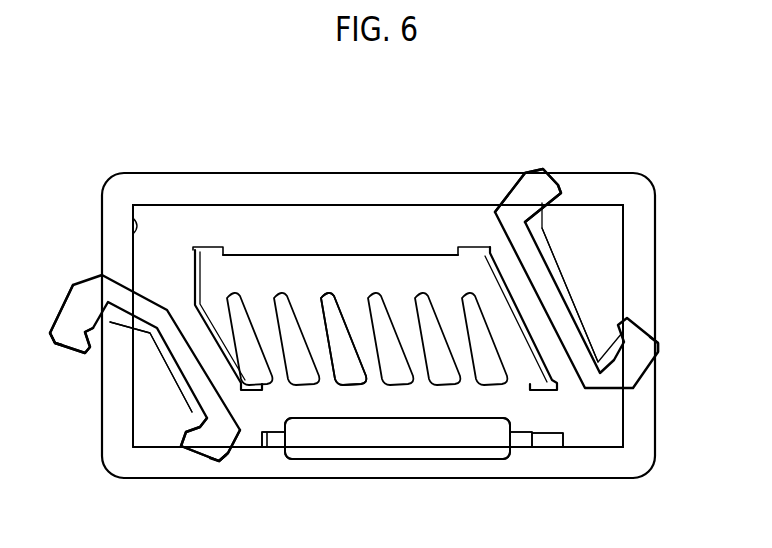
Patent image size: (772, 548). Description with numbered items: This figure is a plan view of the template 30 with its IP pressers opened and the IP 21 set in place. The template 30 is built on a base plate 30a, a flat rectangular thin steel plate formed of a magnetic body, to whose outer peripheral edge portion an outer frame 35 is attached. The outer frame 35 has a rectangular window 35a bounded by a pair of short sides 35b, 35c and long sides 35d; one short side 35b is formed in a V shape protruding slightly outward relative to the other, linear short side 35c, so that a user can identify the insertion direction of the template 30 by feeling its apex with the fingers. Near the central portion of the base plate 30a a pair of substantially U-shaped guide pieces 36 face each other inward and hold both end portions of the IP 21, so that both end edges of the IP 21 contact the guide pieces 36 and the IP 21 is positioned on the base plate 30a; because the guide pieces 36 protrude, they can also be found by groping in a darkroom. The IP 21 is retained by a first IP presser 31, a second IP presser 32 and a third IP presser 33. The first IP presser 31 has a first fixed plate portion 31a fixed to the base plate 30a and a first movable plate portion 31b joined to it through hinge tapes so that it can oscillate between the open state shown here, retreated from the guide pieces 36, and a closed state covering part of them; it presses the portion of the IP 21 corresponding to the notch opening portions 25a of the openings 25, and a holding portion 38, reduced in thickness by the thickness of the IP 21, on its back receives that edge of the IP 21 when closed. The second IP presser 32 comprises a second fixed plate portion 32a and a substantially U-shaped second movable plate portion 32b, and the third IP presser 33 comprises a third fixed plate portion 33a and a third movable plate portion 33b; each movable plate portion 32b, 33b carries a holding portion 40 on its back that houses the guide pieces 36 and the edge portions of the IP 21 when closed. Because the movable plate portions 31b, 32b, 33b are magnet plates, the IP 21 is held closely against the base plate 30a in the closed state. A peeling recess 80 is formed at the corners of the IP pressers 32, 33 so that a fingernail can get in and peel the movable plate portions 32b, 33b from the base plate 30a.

The IP 21 is at (371, 263).
The slot 25 is at (400, 342).
The notch opening portion 25a is at (326, 374).
The template 30 is at (356, 166).
The base plate 30a is at (612, 408).
The first IP presser 31 is at (414, 470).
The first fixed plate portion 31a is at (520, 441).
The first movable plate portion 31b is at (318, 440).
The second IP presser 32 is at (213, 472).
The second fixed plate portion 32a is at (168, 428).
The second movable plate portion 32b is at (84, 354).
The third IP presser 33 is at (528, 158).
The third fixed plate portion 33a is at (603, 253).
The third movable plate portion 33b is at (540, 181).
The outer frame 35 is at (596, 470).
The rectangular window 35a is at (392, 209).
The short side 35b is at (624, 320).
The short side 35c is at (134, 223).
The long side 35d is at (444, 210).
The guide piece 36 is at (196, 250).
The holding portion 38 is at (362, 457).
The holding portion 40 is at (181, 378).
The peeling recess 80 is at (58, 336).